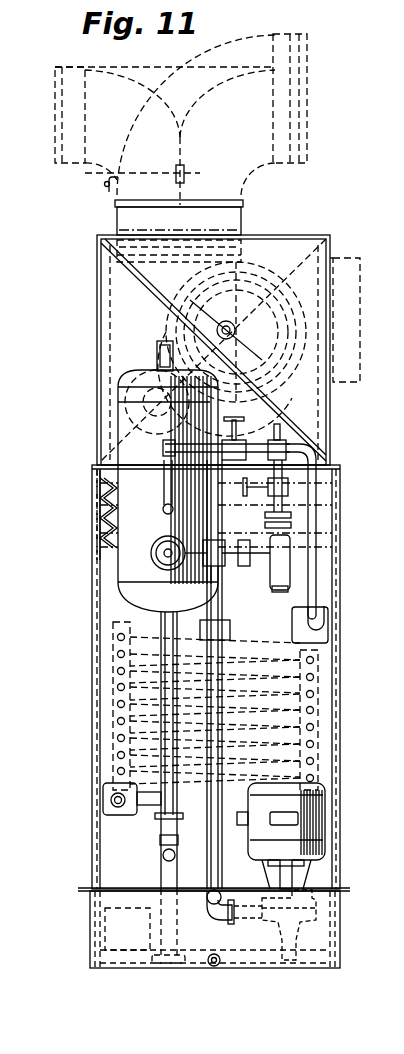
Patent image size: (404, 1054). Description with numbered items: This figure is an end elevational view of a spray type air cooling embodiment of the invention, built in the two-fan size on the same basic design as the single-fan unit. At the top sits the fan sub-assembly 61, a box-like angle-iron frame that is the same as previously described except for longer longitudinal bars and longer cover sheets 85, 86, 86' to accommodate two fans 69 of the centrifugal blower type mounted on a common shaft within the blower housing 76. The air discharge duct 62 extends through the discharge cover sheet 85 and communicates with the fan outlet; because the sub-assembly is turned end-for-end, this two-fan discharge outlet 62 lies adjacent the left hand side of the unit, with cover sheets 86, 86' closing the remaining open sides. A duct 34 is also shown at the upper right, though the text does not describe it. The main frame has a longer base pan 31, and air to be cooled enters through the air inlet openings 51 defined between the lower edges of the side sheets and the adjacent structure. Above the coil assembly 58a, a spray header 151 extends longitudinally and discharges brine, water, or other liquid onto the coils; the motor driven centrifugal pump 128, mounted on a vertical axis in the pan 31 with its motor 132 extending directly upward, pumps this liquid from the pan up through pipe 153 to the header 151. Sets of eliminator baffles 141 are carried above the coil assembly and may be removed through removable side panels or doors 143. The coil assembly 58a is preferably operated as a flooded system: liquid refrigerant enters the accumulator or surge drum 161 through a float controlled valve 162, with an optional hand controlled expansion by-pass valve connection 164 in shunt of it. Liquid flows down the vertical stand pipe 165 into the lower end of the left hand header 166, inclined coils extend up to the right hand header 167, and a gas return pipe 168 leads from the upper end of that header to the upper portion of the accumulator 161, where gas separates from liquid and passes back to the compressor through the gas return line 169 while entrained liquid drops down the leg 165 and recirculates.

The base pan 31 is at (90, 929).
The exhaust duct 34 is at (338, 98).
The air inlet opening 51 is at (97, 872).
The coil assembly 58a is at (110, 664).
The fan sub-assembly 61 is at (93, 289).
The air discharge duct 62 is at (130, 221).
The fan 69 is at (290, 285).
The blower housing 76 is at (292, 398).
The discharge cover sheet 85 is at (268, 237).
The cover sheet 86 is at (127, 402).
The cover sheet 86' is at (335, 512).
The centrifugal pump 128 is at (275, 910).
The motor 132 is at (312, 829).
The eliminator baffles 141 is at (98, 530).
The removable side panel 143 is at (95, 494).
The spray header 151 is at (222, 570).
The pipe 153 is at (218, 735).
The accumulator drum 161 is at (133, 562).
The float controlled valve 162 is at (290, 567).
The hand controlled expansion by-pass valve connection 164 is at (226, 470).
The vertical stand pipe 165 is at (167, 727).
The left hand header 166 is at (110, 770).
The right hand header 167 is at (318, 681).
The gas return pipe 168 is at (315, 508).
The gas return line 169 is at (157, 355).